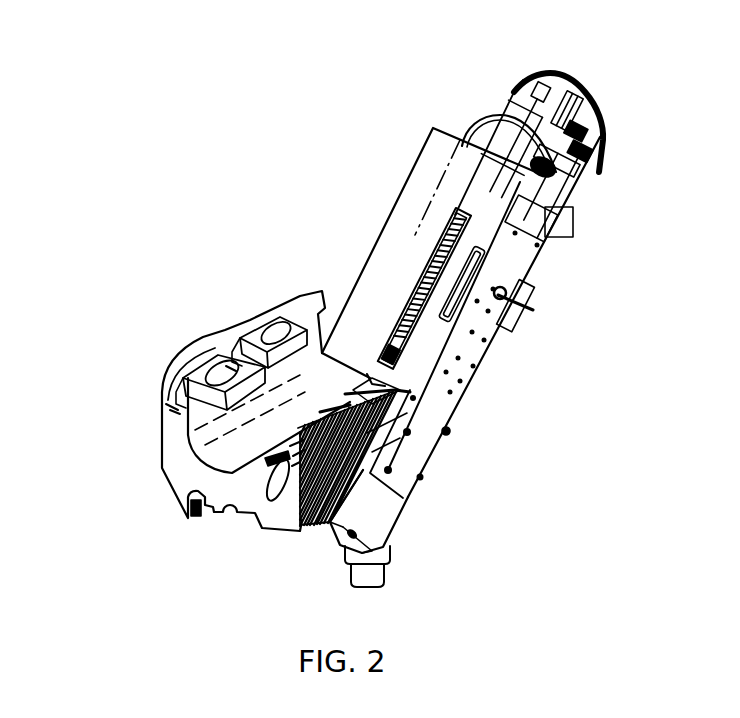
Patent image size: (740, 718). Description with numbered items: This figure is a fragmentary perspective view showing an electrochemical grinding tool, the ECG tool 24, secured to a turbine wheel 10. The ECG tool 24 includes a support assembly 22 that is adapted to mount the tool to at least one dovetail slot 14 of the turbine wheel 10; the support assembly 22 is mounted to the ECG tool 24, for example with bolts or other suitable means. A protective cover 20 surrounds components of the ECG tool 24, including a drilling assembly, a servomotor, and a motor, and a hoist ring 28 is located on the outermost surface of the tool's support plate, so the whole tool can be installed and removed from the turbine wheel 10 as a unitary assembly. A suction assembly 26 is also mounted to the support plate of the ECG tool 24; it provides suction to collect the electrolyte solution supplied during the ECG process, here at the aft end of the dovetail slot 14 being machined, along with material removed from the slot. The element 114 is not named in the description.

The turbine wheel 10 is at (165, 325).
The dovetail slot 14 is at (320, 423).
The protective cover 20 is at (370, 283).
The support assembly 22 is at (373, 447).
The ECG tool 24 is at (390, 120).
The suction assembly 26 is at (452, 430).
The hoist ring 28 is at (383, 513).
The heat sink 114 is at (353, 518).